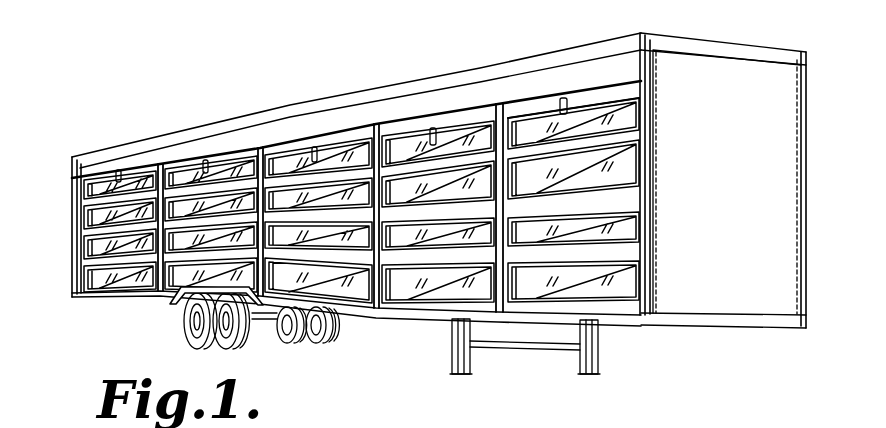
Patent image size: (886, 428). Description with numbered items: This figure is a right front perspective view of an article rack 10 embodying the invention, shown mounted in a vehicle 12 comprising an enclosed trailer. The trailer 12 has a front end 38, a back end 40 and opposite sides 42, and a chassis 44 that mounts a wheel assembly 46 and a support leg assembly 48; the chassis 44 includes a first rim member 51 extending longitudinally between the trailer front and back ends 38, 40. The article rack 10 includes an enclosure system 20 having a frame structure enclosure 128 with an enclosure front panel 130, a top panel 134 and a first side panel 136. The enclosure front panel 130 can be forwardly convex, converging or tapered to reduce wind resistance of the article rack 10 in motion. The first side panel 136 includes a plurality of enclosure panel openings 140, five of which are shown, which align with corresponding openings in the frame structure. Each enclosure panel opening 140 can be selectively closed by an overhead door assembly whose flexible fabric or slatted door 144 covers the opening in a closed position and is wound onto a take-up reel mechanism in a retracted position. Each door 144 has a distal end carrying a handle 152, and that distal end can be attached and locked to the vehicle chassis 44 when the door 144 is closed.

The article rack 10 is at (396, 118).
The vehicle 12 is at (781, 38).
The enclosure system 20 is at (721, 295).
The front end 38 is at (784, 122).
The back end 40 is at (72, 195).
The opposite sides 42 is at (322, 116).
The chassis 44 is at (387, 314).
The wheel assembly 46 is at (258, 353).
The support leg assembly 48 is at (598, 361).
The first rim member 51 is at (117, 297).
The frame structure enclosure 128 is at (503, 85).
The enclosure front panel 130 is at (746, 109).
The top panel 134 is at (614, 38).
The first side panel 136 is at (600, 80).
The enclosure panel openings 140 is at (500, 100).
The door 144 is at (140, 170).
The handle 152 is at (198, 155).